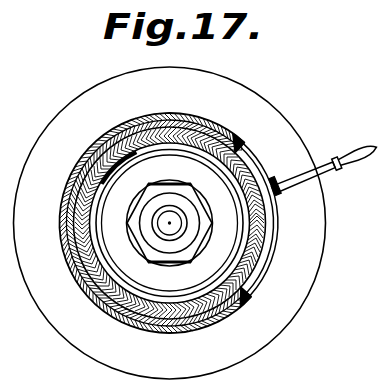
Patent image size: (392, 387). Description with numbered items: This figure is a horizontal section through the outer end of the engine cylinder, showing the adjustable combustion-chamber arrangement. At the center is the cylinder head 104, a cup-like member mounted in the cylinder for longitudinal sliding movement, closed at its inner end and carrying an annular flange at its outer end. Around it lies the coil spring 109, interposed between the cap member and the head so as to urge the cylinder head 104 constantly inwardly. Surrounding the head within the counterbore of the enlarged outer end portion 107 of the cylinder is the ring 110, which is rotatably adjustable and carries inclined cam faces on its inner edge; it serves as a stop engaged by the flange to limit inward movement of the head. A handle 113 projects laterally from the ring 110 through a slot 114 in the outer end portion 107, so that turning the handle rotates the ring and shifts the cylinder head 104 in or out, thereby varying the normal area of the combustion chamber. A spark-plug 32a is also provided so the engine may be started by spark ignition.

The outer end portion 107 is at (155, 335).
The ring 110 is at (208, 135).
The cylinder head 104 is at (168, 143).
The coil spring 109 is at (72, 242).
The spark-plug 32a is at (169, 250).
The slot 114 is at (269, 259).
The handle 113 is at (325, 158).